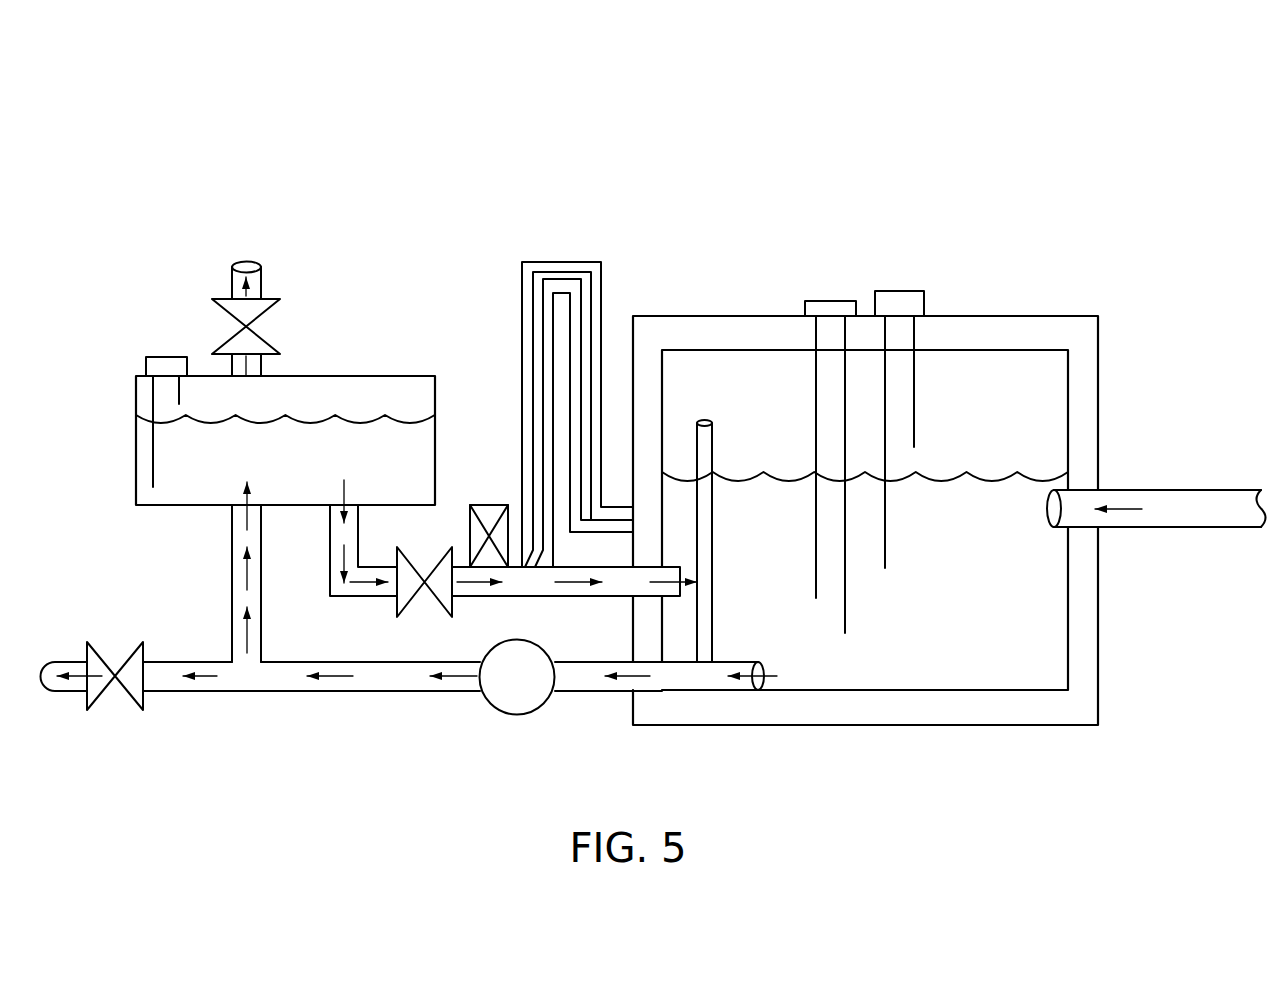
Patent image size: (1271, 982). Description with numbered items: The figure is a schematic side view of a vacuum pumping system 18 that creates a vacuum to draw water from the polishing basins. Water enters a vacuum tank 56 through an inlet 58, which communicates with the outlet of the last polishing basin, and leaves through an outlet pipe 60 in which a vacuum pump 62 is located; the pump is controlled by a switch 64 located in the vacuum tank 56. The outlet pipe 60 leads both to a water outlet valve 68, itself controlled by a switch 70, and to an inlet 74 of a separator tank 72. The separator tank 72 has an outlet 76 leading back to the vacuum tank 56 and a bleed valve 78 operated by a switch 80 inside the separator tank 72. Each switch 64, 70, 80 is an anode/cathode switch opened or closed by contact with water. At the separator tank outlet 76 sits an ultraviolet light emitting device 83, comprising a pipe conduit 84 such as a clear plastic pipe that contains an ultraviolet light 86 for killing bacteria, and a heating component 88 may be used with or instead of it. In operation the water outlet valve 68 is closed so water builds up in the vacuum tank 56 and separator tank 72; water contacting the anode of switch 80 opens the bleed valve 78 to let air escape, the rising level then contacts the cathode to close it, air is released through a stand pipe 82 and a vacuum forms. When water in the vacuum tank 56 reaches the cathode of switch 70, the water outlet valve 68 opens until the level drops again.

The vacuum pumping system 18 is at (190, 142).
The vacuum tank 56 is at (954, 555).
The inlet 58 is at (1140, 498).
The outlet pipe 60 is at (338, 690).
The vacuum pump 62 is at (501, 691).
The switch 64 is at (832, 304).
The water outlet valve 68 is at (133, 696).
The switch 70 is at (895, 292).
The separator tank 72 is at (259, 464).
The inlet 74 is at (236, 545).
The outlet 76 is at (333, 546).
The bleed valve 78 is at (267, 303).
The switch 80 is at (163, 364).
The stand pipe 82 is at (707, 438).
The ultraviolet light emitting device 83 is at (566, 358).
The pipe conduit 84 is at (537, 320).
The ultraviolet light 86 is at (595, 287).
The heating component 88 is at (492, 512).